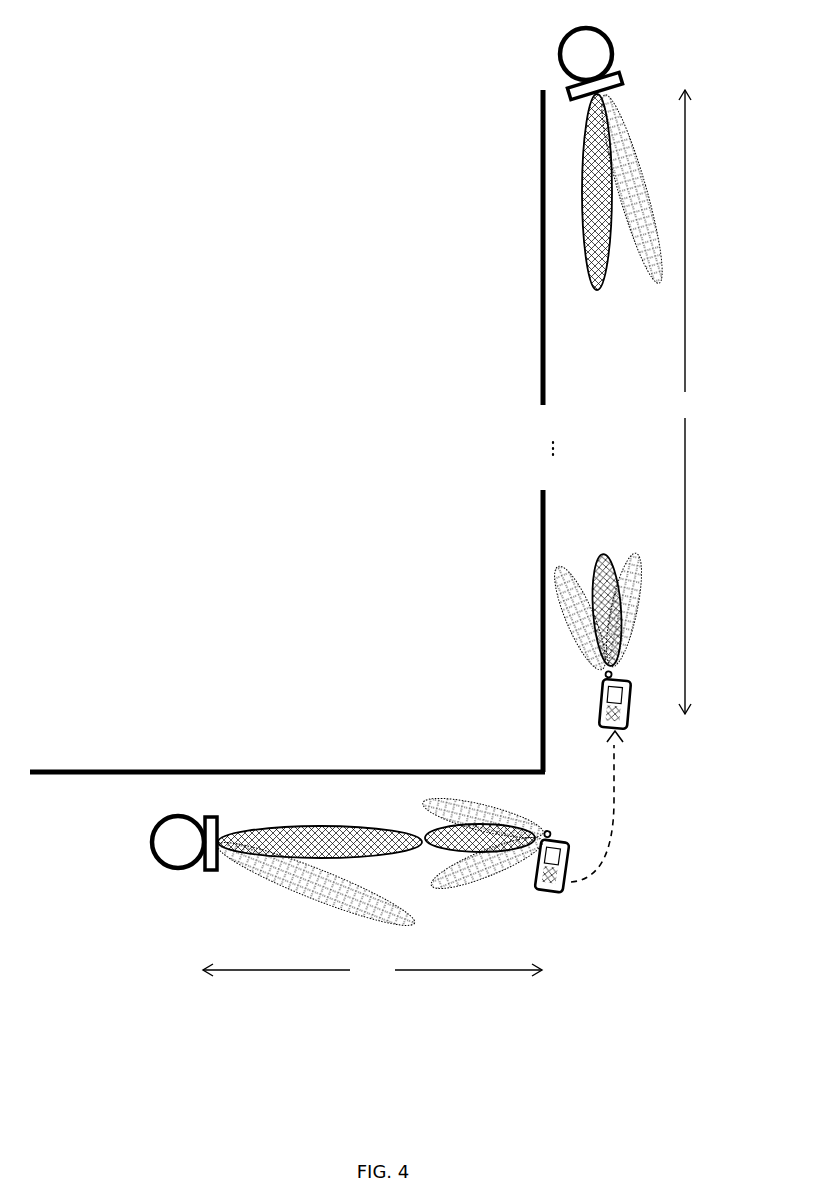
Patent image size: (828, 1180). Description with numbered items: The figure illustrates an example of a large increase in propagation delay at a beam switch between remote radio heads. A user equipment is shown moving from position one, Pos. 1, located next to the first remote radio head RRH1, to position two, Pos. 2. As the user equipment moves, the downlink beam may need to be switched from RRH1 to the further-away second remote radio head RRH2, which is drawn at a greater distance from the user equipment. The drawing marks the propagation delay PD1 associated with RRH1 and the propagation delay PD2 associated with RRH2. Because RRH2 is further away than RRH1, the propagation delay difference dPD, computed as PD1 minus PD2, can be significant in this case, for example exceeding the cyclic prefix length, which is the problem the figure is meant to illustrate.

The remote radio head RRH1 is at (239, 876).
The remote radio head RRH2 is at (628, 148).
The position 1 Pos. 1 is at (496, 858).
The position 2 Pos. 2 is at (629, 656).
The propagation delay PD1 is at (372, 970).
The propagation delay PD2 is at (685, 402).